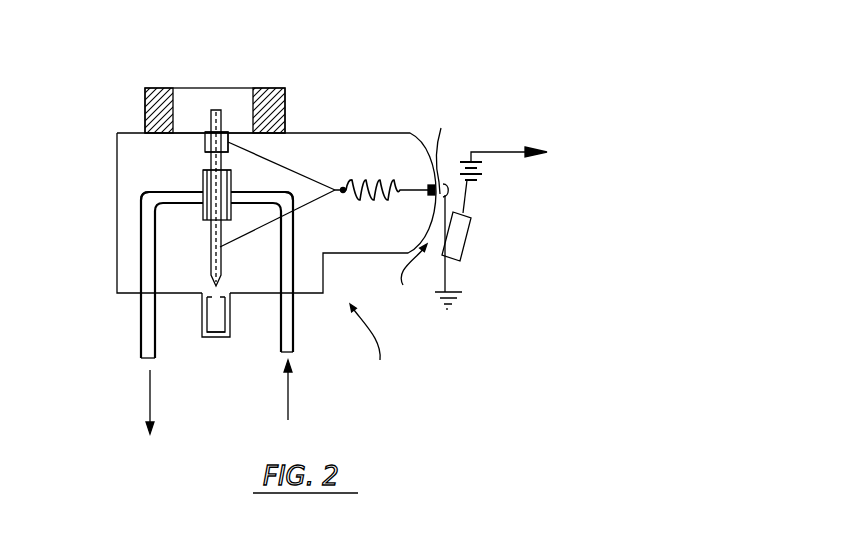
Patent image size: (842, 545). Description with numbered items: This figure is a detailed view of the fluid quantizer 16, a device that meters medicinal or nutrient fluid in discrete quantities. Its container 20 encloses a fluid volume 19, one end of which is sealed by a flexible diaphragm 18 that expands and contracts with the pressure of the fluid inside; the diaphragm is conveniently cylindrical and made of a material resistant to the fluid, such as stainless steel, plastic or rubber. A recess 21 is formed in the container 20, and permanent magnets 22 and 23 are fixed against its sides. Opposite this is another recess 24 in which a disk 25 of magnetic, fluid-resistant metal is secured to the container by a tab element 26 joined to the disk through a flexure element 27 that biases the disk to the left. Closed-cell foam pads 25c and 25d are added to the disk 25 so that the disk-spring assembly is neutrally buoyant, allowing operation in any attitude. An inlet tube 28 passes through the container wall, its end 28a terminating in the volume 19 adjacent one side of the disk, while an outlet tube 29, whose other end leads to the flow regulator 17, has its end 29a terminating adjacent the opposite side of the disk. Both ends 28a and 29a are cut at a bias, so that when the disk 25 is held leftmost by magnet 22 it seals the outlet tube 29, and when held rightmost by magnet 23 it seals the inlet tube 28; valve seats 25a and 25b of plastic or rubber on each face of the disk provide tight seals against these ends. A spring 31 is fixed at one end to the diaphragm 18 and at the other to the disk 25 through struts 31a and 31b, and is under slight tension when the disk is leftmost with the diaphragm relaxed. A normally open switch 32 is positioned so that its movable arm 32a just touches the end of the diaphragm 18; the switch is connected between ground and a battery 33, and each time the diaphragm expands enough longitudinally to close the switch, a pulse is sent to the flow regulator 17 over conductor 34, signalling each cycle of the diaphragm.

The fluid quantizer 16 is at (373, 347).
The flow regulator 17 is at (627, 156).
The diaphragm 18 is at (403, 272).
The volume 19 is at (384, 166).
The container 20 is at (367, 133).
The recess 21 is at (193, 97).
The permanent magnet 22 is at (142, 107).
The permanent magnet 23 is at (285, 105).
The recess 24 is at (200, 317).
The disk 25 is at (215, 110).
The valve seat 25a is at (203, 170).
The valve seat 25b is at (228, 170).
The foam pad 25c is at (205, 143).
The foam pad 25d is at (226, 135).
The tab element 26 is at (216, 337).
The flexure element 27 is at (218, 289).
The inlet tube 28 is at (294, 343).
The inlet tube end 28a is at (236, 194).
The outlet tube 29 is at (140, 340).
The outlet tube end 29a is at (197, 192).
The spring 31 is at (368, 205).
The strut 31a is at (307, 155).
The strut 31b is at (307, 204).
The normally open switch 32 is at (468, 246).
The movable arm 32a is at (442, 200).
The battery 33 is at (478, 178).
The conductor 34 is at (498, 152).